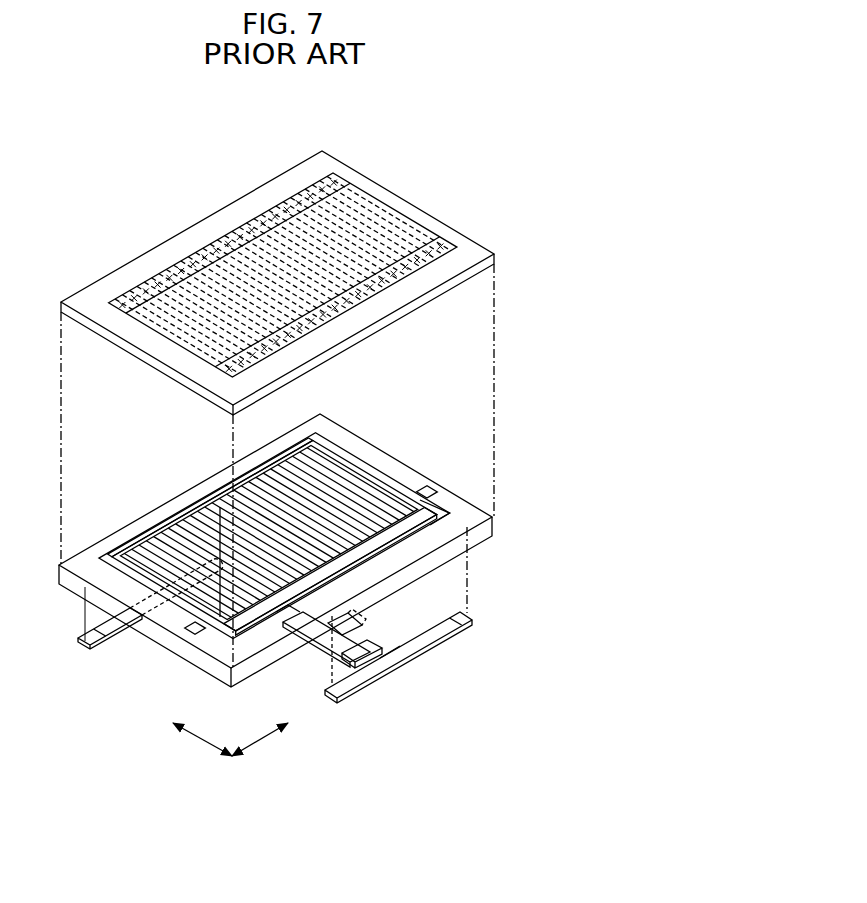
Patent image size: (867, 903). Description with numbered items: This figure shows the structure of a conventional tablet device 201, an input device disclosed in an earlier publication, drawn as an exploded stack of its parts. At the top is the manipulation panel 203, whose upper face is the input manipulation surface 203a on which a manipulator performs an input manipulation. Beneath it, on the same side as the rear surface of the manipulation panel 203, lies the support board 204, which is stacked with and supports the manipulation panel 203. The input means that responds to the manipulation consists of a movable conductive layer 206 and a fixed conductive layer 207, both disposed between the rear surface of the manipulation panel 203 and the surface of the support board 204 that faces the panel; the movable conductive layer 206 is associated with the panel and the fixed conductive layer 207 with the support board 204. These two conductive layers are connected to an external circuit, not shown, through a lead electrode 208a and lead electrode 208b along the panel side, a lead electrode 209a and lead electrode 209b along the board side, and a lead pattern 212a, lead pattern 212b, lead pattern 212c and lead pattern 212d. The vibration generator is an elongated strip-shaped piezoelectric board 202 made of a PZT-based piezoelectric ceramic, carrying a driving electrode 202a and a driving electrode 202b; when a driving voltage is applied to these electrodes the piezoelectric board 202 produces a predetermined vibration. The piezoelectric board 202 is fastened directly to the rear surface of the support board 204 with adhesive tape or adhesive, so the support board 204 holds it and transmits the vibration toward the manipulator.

The tablet device 201 is at (445, 156).
The piezoelectric board 202 is at (124, 641).
The driving electrode 202a is at (87, 650).
The driving electrode 202b is at (392, 658).
The manipulation panel 203 is at (468, 253).
The input manipulation surface 203a is at (240, 257).
The support board 204 is at (463, 523).
The movable conductive layer 206 is at (290, 212).
The fixed conductive layer 207 is at (353, 480).
The lead electrode 208a is at (365, 202).
The lead electrode 208b is at (165, 335).
The lead electrode 209a is at (272, 462).
The lead electrode 209b is at (357, 560).
The lead pattern 212a is at (415, 477).
The lead pattern 212b is at (210, 638).
The lead pattern 212c is at (440, 497).
The lead pattern 212d is at (281, 623).